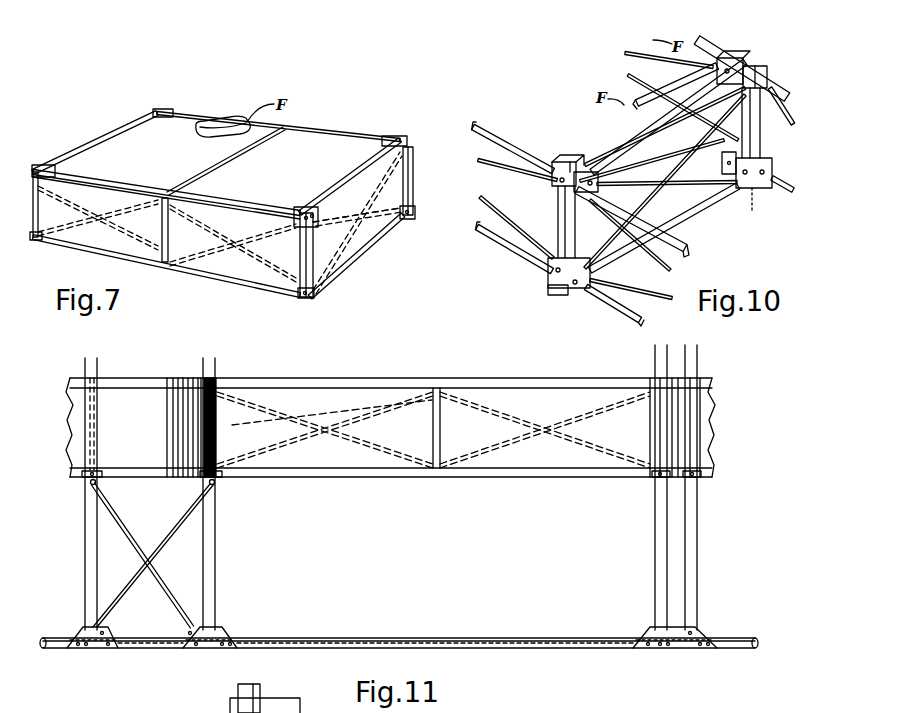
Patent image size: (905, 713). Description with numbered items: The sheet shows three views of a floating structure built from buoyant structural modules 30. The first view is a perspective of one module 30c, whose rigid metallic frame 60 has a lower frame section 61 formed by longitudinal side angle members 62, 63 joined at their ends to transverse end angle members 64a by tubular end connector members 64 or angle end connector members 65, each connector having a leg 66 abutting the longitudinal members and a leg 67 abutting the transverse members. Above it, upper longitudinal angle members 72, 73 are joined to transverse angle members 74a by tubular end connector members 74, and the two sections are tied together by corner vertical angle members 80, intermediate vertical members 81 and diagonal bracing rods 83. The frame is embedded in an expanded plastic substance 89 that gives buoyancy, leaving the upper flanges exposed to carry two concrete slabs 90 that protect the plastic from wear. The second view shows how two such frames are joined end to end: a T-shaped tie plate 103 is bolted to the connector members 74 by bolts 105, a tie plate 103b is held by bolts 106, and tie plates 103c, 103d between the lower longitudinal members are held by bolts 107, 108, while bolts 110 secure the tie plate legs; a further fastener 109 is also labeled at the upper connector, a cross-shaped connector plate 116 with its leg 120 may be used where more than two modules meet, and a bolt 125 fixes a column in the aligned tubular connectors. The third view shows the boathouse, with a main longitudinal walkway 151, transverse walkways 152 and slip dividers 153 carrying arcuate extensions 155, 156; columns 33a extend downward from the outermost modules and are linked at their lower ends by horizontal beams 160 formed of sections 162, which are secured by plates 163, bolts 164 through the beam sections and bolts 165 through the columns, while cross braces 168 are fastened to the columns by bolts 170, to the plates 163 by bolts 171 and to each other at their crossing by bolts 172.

In FIG. 11, the module 30 is at (494, 478).
In FIG. 7, the module 30c is at (360, 97).
In FIG. 11, the column 33a is at (215, 585).
In FIG. 10, the frame 60 is at (507, 126).
In FIG. 7, the lower frame section 61 is at (228, 283).
In FIG. 7, the longitudinal side angle member 62 is at (96, 255).
In FIG. 10, the longitudinal side angle member 62 is at (478, 228).
In FIG. 10, the longitudinal side angle member 63 is at (668, 104).
In FIG. 7, the end connector member 64 is at (413, 216).
In FIG. 10, the end connector member 64 is at (722, 170).
In FIG. 7, the transverse end angle member 64a is at (362, 267).
In FIG. 10, the transverse end angle member 64a is at (608, 262).
In FIG. 10, the end connector member 65 is at (757, 158).
In FIG. 10, the side or leg of connector member 66 is at (548, 270).
In FIG. 10, the side or leg of connector member 67 is at (590, 248).
In FIG. 7, the longitudinal angle member 72 is at (100, 188).
In FIG. 10, the longitudinal angle member 72 is at (475, 135).
In FIG. 7, the longitudinal angle member 73 is at (240, 118).
In FIG. 10, the longitudinal angle member 73 is at (672, 38).
In FIG. 7, the end connector member 74 is at (153, 111).
In FIG. 10, the end connector member 74 is at (553, 160).
In FIG. 7, the transverse angle member 74a is at (81, 148).
In FIG. 10, the transverse angle member 74a is at (632, 133).
In FIG. 7, the corner vertical angle member 80 is at (413, 166).
In FIG. 7, the intermediate vertical member 81 is at (163, 242).
In FIG. 7, the bracing rod 83 is at (200, 263).
In FIG. 10, the bracing rod 83 is at (482, 196).
In FIG. 11, the bracing rod 83 is at (340, 430).
In FIG. 7, the expanded plastic substance 89 is at (78, 241).
In FIG. 11, the expanded plastic substance 89 is at (340, 388).
In FIG. 7, the concrete slab 90 is at (180, 128).
In FIG. 10, the T-shaped tie plate 103 is at (552, 186).
In FIG. 10, the tie plate 103b is at (760, 60).
In FIG. 10, the tie plate 103c is at (565, 286).
In FIG. 10, the tie plate 103d is at (770, 210).
In FIG. 10, the bolt 105 is at (556, 180).
In FIG. 10, the bolt 106 is at (736, 60).
In FIG. 10, the bolt 107 is at (733, 154).
In FIG. 10, the bolt 108 is at (774, 175).
In FIG. 10, the pin 109 is at (575, 162).
In FIG. 10, the bolt 110 is at (607, 154).
In FIG. 11, the cross-shaped connector plate 116 is at (706, 712).
In FIG. 11, the leg or flange of cross-shaped connector 120 is at (576, 712).
In FIG. 11, the bolt 125 is at (100, 468).
In FIG. 11, the main longitudinal walkway 151 is at (586, 455).
In FIG. 11, the transverse walkway 152 is at (146, 380).
In FIG. 11, the slip divider 153 is at (698, 378).
In FIG. 11, the arcuate extension 155 is at (209, 388).
In FIG. 11, the arcuate extension 156 is at (689, 425).
In FIG. 11, the horizontal beam 160 is at (527, 636).
In FIG. 11, the beam section 162 is at (164, 652).
In FIG. 11, the plate 163 is at (112, 654).
In FIG. 11, the bolt 164 is at (112, 636).
In FIG. 11, the bolt 165 is at (650, 630).
In FIG. 11, the cross brace 168 is at (128, 596).
In FIG. 11, the bolt 170 is at (99, 484).
In FIG. 11, the bolt 171 is at (100, 630).
In FIG. 11, the bolt 172 is at (162, 538).